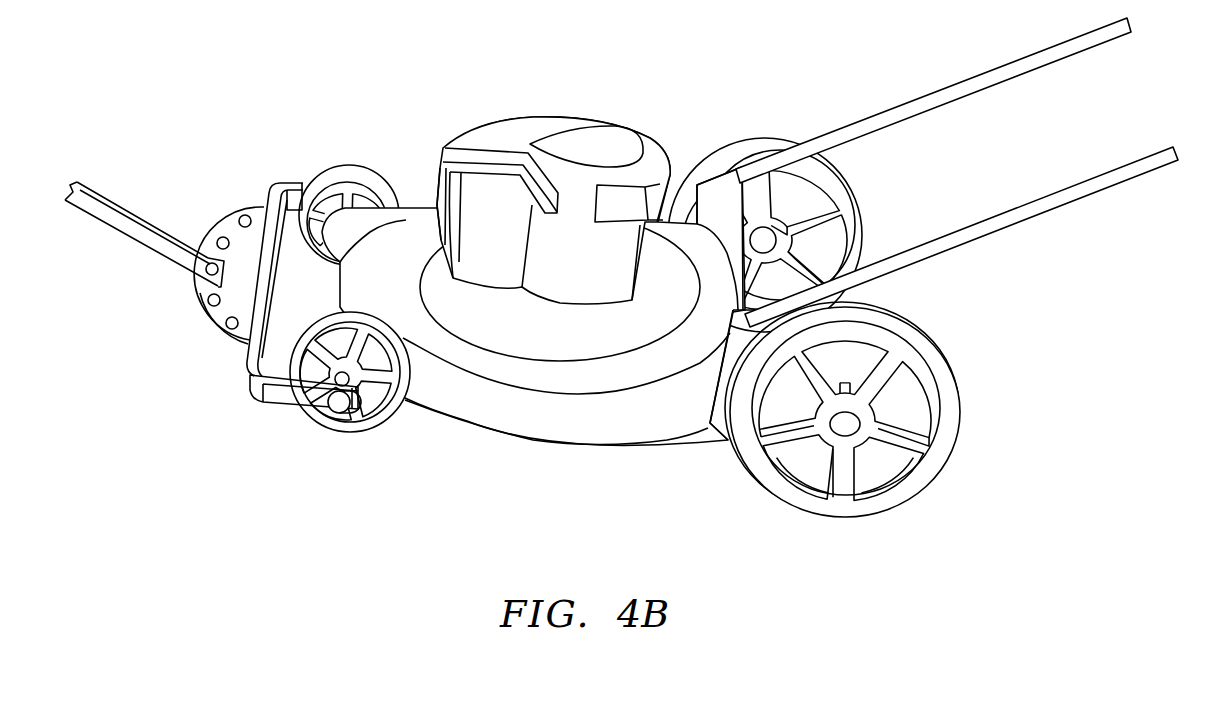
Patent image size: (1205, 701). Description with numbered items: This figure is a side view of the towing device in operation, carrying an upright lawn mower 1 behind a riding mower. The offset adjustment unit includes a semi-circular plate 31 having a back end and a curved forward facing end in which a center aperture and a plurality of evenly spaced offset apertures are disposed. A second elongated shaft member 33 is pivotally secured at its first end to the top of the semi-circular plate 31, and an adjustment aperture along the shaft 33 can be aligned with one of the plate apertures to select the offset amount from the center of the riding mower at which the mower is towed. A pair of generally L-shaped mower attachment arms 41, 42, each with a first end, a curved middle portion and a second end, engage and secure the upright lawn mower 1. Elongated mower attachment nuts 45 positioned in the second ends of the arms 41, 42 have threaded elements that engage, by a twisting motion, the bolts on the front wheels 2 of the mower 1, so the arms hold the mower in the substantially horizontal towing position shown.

The upright lawn mower 1 is at (547, 124).
The front wheels 2 is at (358, 170).
The semi-circular plate 31 is at (192, 298).
The second elongated shaft member 33 is at (130, 215).
The mower attachment arm 41 is at (283, 182).
The mower attachment arm 42 is at (250, 385).
The mower attachment nut 45 is at (343, 412).